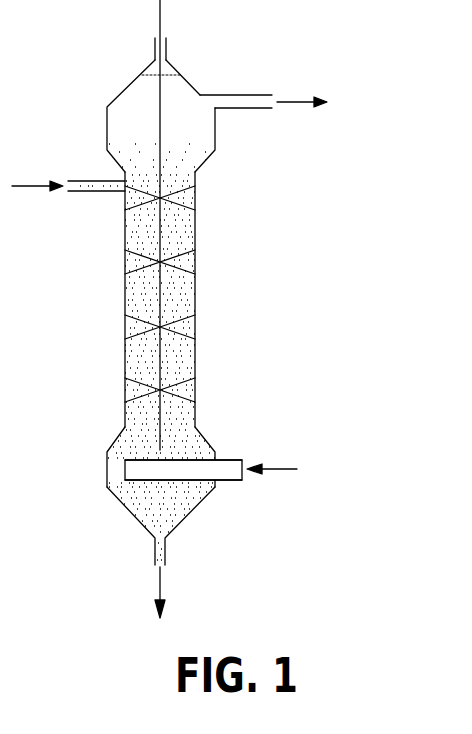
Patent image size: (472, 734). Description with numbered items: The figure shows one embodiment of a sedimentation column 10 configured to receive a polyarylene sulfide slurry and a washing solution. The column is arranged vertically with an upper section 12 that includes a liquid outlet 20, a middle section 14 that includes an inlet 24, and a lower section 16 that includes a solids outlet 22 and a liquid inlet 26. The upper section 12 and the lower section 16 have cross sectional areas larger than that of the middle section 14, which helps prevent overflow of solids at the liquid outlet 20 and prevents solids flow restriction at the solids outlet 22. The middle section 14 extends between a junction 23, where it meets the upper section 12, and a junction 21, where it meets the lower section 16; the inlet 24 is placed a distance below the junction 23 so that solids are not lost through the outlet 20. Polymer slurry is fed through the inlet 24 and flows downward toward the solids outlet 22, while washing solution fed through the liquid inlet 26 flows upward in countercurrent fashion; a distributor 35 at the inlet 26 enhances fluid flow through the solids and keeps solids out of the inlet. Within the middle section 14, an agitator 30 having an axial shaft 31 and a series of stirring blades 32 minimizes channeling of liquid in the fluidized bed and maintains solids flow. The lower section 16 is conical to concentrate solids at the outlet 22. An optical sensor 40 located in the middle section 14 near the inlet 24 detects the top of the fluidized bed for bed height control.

The sedimentation column 10 is at (226, 309).
The upper section 12 is at (142, 122).
The middle section 14 is at (125, 283).
The lower section 16 is at (115, 498).
The liquid outlet 20 is at (240, 95).
The junction 21 is at (123, 428).
The solids outlet 22 is at (167, 548).
The junction 23 is at (37, 173).
The inlet 24 is at (97, 192).
The liquid inlet 26 is at (227, 480).
The agitator 30 is at (160, 250).
The axial shaft 31 is at (162, 23).
The stirring blades 32 is at (188, 318).
The distributor 35 is at (172, 458).
The optical sensor 40 is at (190, 182).